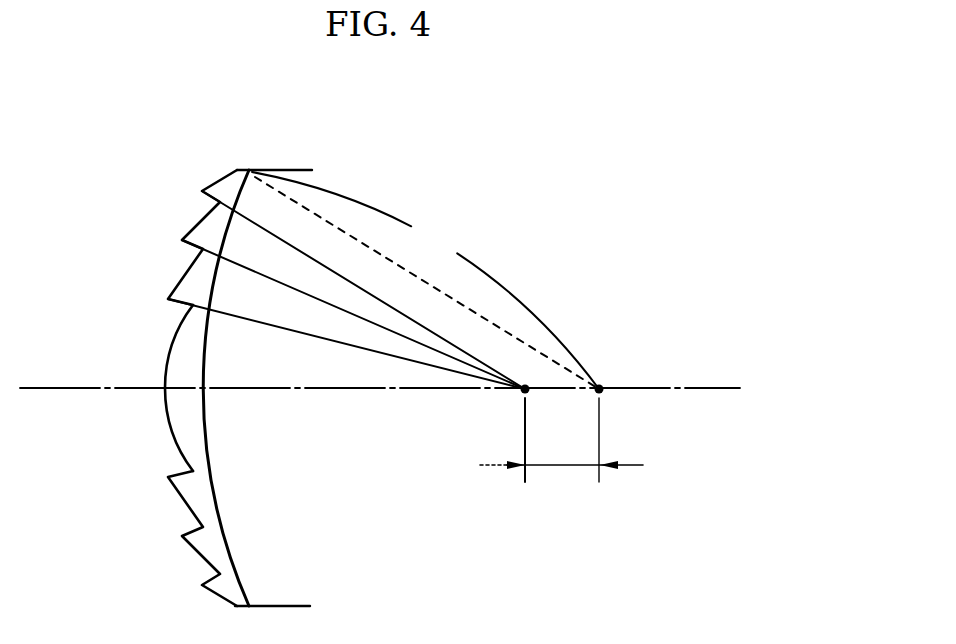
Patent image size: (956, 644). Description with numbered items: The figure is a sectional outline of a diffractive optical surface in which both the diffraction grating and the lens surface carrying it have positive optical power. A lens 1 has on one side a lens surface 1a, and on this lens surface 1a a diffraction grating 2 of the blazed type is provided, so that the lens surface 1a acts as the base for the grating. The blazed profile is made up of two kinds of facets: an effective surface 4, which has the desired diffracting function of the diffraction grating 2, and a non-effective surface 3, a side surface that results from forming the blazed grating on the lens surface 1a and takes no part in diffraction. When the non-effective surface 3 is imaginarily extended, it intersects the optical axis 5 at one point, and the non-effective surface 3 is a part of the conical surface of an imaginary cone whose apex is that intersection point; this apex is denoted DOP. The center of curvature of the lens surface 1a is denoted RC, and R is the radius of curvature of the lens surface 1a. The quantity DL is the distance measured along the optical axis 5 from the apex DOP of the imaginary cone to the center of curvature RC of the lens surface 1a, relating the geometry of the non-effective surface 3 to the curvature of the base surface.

The lens 1 is at (202, 344).
The lens surface 1a is at (232, 569).
The diffraction grating 2 is at (177, 356).
The non-effective surface 3 is at (187, 532).
The effective surface 4 is at (188, 234).
The optical axis 5 is at (690, 386).
The radius of curvature R is at (425, 280).
The center of curvature RC is at (603, 385).
The apex of imaginary cone DOP is at (522, 396).
The distance DL is at (630, 463).